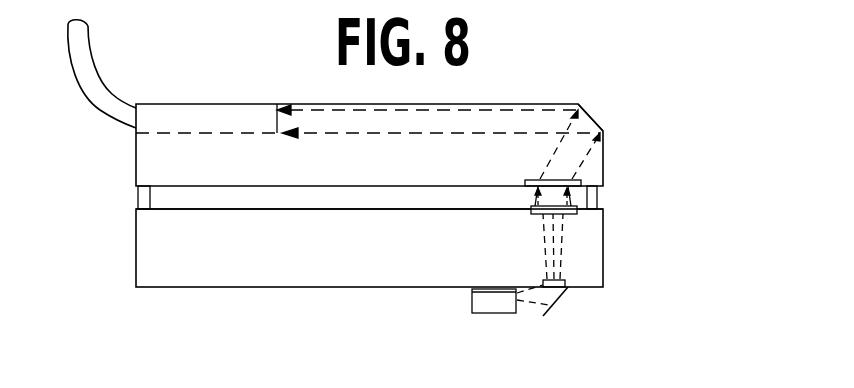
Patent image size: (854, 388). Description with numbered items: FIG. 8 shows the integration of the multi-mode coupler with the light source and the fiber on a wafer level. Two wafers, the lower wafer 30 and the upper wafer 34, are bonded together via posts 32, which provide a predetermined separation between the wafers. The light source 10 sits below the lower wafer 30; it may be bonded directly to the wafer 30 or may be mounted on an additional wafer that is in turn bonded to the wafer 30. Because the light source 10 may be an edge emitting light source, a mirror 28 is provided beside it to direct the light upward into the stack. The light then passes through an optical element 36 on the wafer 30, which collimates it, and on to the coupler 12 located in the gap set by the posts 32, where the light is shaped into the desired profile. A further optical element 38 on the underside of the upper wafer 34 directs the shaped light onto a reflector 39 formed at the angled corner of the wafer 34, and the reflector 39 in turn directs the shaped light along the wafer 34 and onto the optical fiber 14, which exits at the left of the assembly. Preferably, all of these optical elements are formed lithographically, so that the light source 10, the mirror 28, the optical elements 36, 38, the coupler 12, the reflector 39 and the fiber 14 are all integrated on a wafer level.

The fiber 14 is at (93, 57).
The wafer 34 is at (135, 152).
The posts 32 is at (136, 198).
The wafer 30 is at (136, 246).
The reflector 39 is at (583, 104).
The further optical element 38 is at (577, 178).
The coupler 12 is at (577, 214).
The optical element 36 is at (564, 281).
The light source 10 is at (493, 313).
The mirror 28 is at (563, 300).